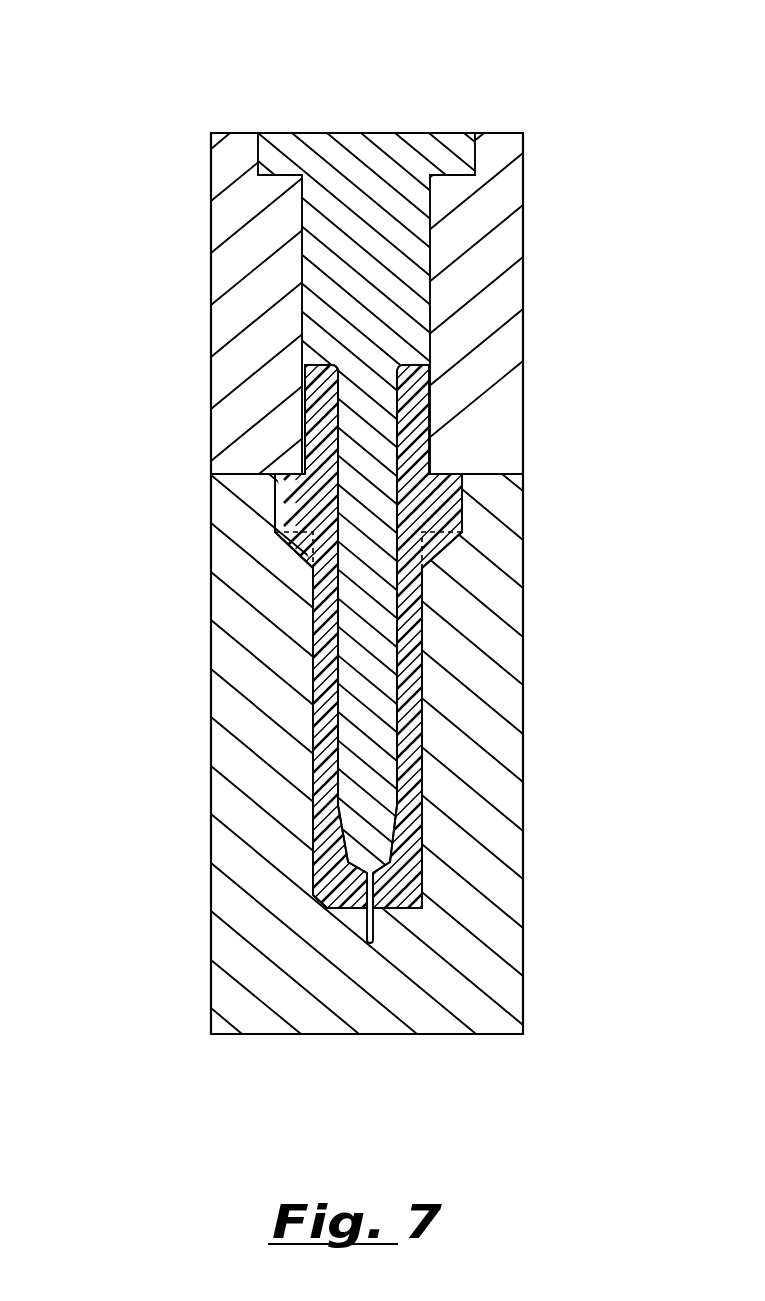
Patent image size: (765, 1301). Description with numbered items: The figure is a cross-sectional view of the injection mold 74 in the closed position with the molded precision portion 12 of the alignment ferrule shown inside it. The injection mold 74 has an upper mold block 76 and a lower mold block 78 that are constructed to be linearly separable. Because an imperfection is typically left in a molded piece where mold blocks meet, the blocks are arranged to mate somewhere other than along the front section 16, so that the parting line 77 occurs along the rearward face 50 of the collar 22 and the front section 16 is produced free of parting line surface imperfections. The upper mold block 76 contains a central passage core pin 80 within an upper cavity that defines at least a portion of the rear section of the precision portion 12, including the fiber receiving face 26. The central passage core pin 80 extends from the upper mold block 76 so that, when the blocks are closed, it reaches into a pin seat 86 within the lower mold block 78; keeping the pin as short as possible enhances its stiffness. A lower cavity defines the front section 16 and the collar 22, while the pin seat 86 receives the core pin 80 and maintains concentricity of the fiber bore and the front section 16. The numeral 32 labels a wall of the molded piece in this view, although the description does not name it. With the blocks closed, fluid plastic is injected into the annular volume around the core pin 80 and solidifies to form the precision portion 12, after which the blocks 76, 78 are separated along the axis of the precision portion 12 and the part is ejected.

The precision portion 12 is at (443, 708).
The front section 16 is at (422, 833).
The collar 22 is at (463, 503).
The fiber receiving face 26 is at (320, 365).
The die lip wall 32 is at (343, 658).
The rearward face 50 is at (448, 475).
The injection mold 74 is at (170, 350).
The upper mold block 76 is at (211, 184).
The parting line 77 is at (242, 477).
The lower mold block 78 is at (211, 957).
The central passage core pin 80 is at (368, 176).
The pin seat 86 is at (376, 940).